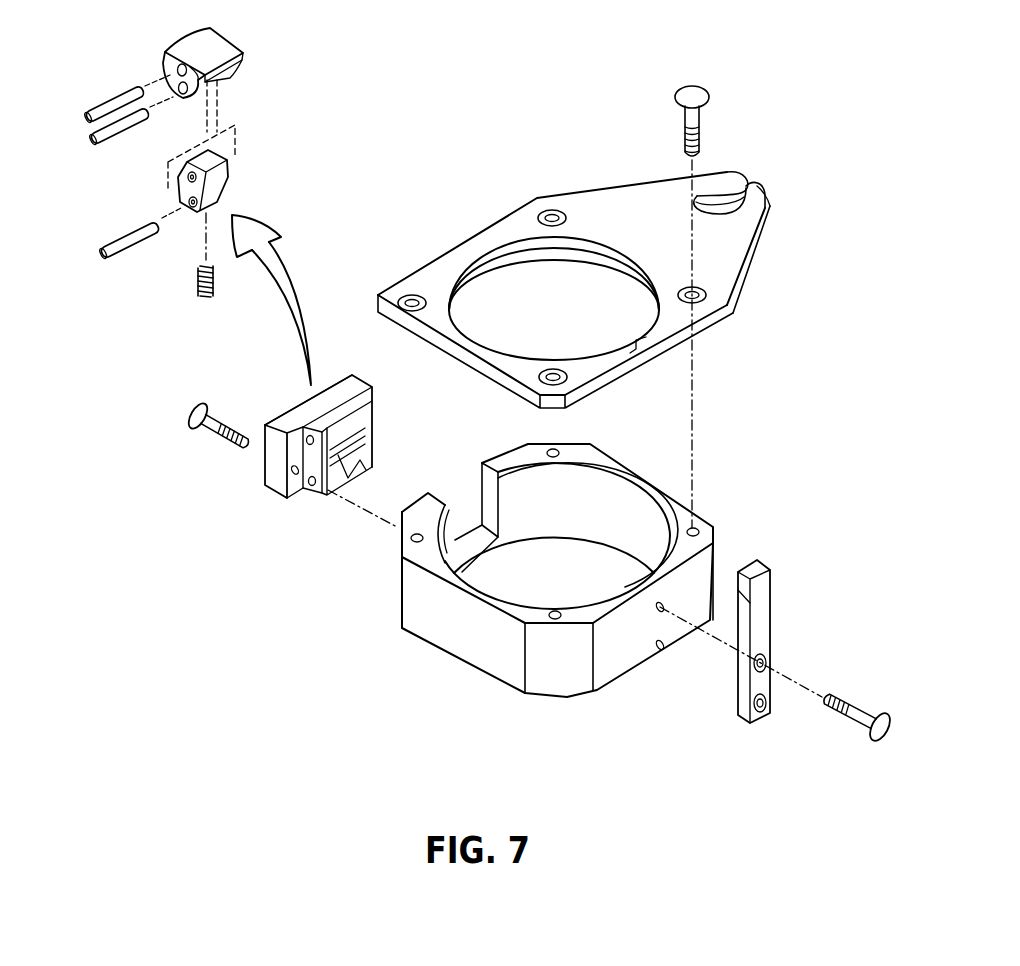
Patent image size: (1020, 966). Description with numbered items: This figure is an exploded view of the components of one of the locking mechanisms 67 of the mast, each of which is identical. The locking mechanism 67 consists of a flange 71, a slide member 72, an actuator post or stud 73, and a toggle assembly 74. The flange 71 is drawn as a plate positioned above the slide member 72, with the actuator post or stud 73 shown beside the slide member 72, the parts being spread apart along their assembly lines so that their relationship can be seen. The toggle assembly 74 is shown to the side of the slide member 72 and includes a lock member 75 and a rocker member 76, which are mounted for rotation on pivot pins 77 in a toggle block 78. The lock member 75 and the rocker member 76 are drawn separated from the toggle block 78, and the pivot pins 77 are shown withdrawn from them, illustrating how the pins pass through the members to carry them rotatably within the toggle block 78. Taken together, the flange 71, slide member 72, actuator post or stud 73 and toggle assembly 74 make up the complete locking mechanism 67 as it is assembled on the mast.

The locking mechanism 67 is at (318, 567).
The flange 71 is at (742, 283).
The slide member 72 is at (456, 657).
The actuator post or stud 73 is at (768, 566).
The toggle assembly 74 is at (262, 478).
The lock member 75 is at (228, 177).
The rocker member 76 is at (237, 43).
The pivot pins 77 is at (86, 140).
The toggle block 78 is at (283, 412).